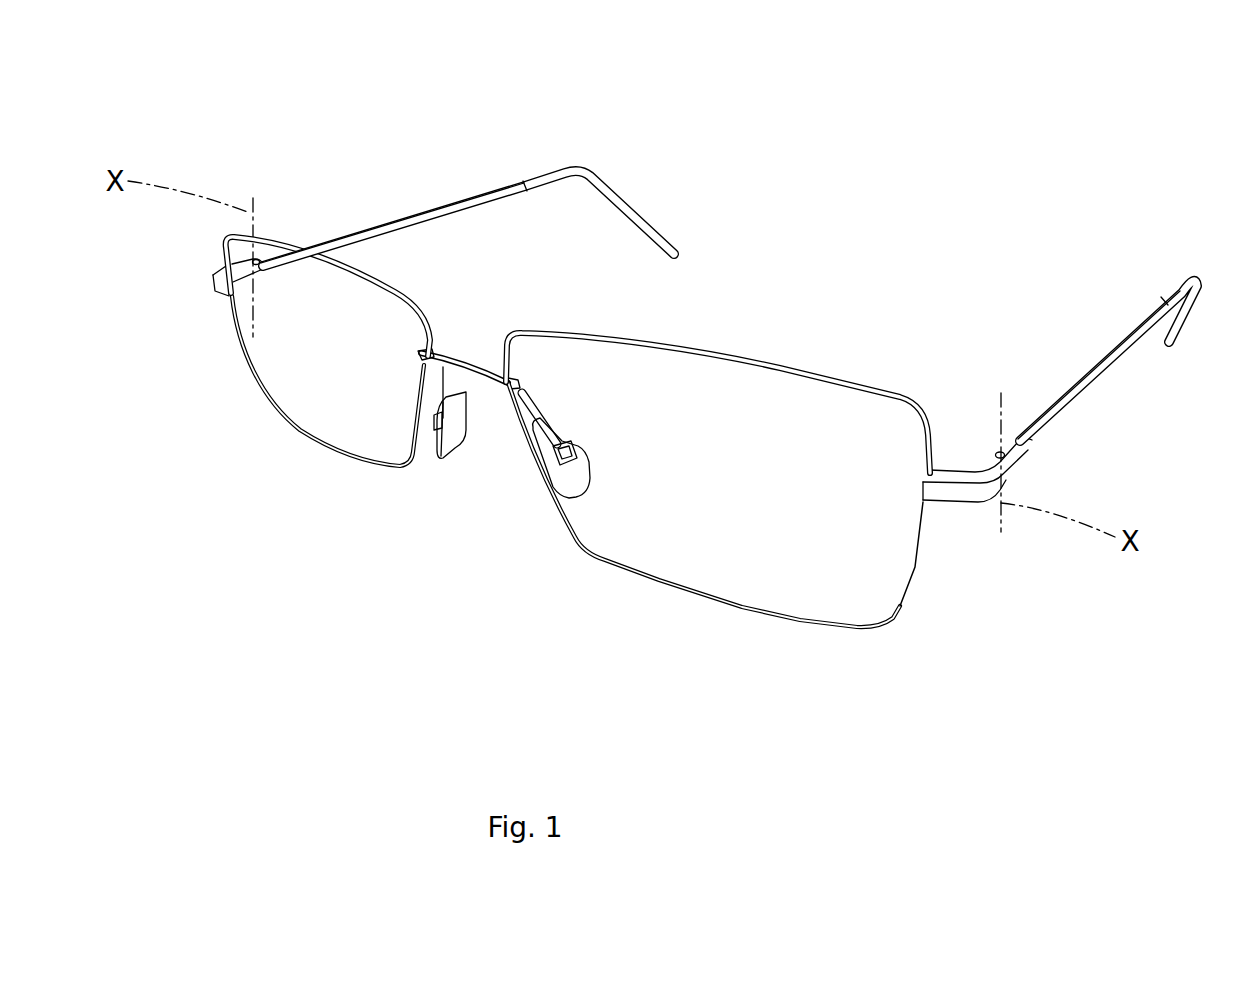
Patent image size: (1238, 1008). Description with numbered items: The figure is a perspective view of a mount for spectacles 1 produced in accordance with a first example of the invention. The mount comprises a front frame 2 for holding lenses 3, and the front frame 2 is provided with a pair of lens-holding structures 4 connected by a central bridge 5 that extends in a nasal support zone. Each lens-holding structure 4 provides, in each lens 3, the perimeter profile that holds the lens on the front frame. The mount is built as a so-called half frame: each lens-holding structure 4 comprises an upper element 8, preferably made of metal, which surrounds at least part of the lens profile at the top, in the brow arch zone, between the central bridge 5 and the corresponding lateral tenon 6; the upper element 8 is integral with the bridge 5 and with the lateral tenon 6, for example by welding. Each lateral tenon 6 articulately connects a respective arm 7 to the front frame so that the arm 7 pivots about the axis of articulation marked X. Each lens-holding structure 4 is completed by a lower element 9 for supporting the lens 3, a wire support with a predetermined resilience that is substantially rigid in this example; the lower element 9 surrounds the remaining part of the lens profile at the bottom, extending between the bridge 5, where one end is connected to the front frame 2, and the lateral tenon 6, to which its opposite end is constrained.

The mount for spectacles 1 is at (873, 191).
The front frame 2 is at (375, 485).
The lens 3 is at (277, 367).
The lens-holding structure 4 is at (402, 272).
The central bridge 5 is at (467, 363).
The lateral tenon 6 is at (220, 288).
The arm 7 is at (440, 203).
The upper element 8 is at (424, 314).
The lower element 9 is at (300, 432).